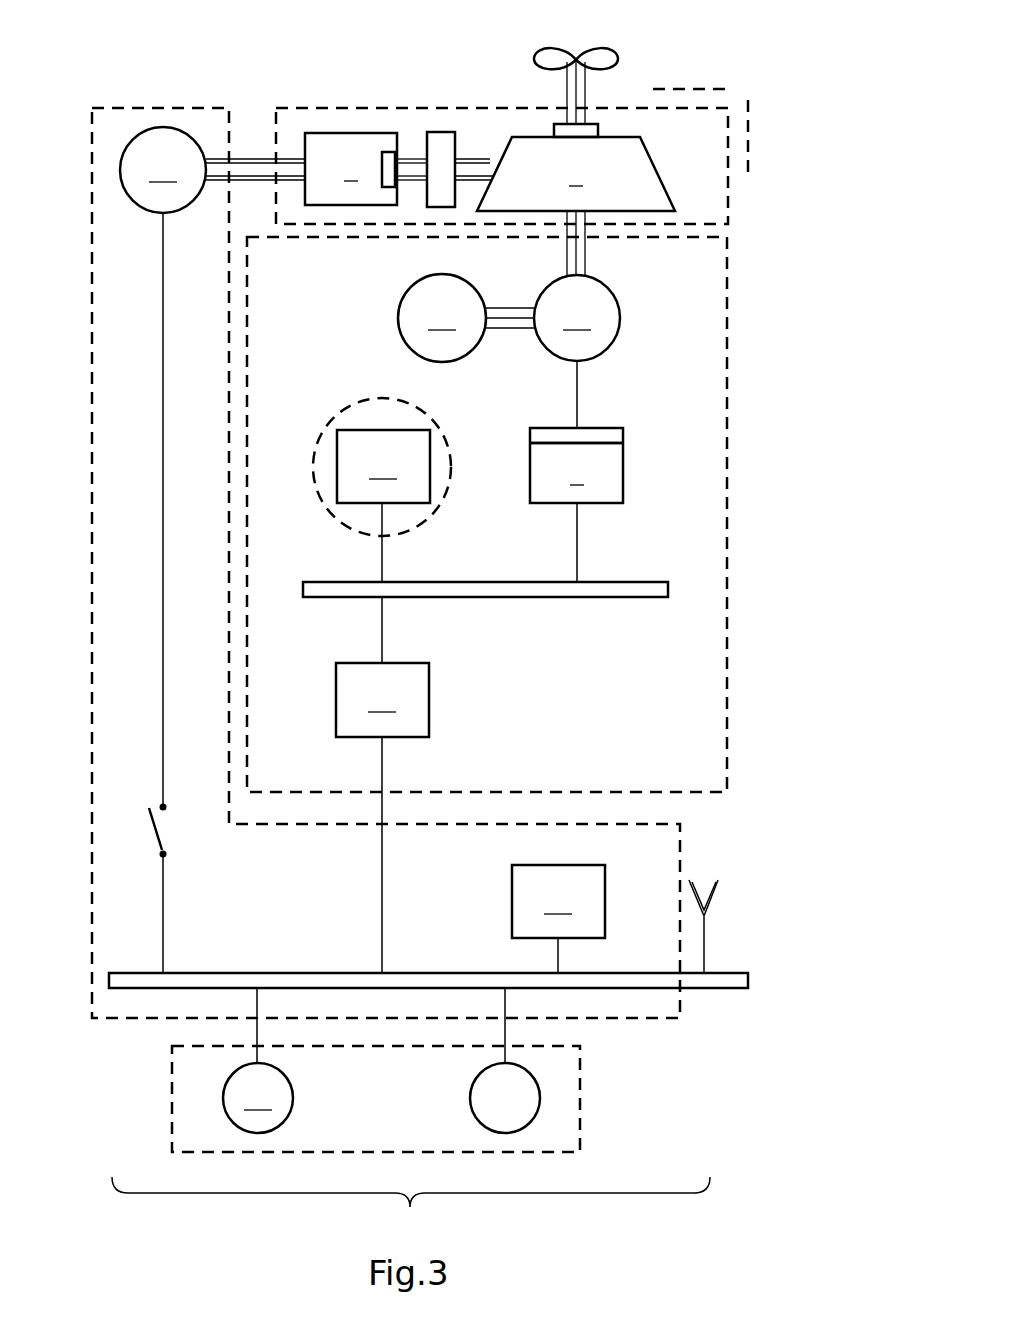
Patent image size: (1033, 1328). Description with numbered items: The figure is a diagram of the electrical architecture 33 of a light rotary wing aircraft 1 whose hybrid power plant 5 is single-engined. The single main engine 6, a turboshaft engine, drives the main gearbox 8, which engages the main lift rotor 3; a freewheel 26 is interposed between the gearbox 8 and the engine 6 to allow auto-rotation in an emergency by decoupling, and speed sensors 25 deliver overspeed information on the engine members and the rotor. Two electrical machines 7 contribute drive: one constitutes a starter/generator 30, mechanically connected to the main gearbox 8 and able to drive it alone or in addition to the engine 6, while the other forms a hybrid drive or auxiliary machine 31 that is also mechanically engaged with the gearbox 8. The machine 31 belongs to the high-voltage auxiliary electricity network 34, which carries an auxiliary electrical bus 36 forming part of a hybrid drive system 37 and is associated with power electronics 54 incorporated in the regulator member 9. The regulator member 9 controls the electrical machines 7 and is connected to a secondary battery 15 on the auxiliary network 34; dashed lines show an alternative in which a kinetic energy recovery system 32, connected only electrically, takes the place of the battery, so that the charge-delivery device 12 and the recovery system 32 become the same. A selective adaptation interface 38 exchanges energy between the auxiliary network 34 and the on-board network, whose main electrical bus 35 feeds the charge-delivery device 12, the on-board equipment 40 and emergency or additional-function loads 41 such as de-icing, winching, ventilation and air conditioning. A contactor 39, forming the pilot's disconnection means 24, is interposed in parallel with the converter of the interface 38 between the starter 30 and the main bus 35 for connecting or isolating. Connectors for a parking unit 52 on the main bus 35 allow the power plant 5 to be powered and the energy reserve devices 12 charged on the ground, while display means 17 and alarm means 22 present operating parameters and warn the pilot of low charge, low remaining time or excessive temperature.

The rotary wing aircraft 1 is at (750, 102).
The main lift rotor 3 is at (592, 52).
The power plant 5 is at (253, 141).
The main engine 6 is at (389, 128).
The electrical machine 7 is at (391, 208).
The main gearbox 8 is at (576, 174).
The regulator member 9 is at (576, 465).
The device for delivering electric charge 12 is at (438, 463).
The secondary battery 15 is at (383, 466).
The display means 17 is at (459, 1098).
The alarm means 22 is at (471, 1098).
The disconnection means 24 is at (182, 834).
The speed sensor 25 is at (598, 127).
The freewheel 26 is at (440, 132).
The starter/generator 30 is at (155, 134).
The hybrid drive machine 31 is at (606, 318).
The kinetic energy recovery system 32 is at (358, 405).
The electrical architecture 33 is at (411, 1207).
The auxiliary electricity network 34 is at (727, 678).
The main electrical bus 35 is at (302, 972).
The auxiliary electrical bus 36 is at (490, 598).
The hybrid drive system 37 is at (734, 749).
The selective adaptation interface 38 is at (382, 700).
The contactor 39 is at (216, 593).
The on-board equipment 40 is at (172, 1078).
The emergency loads 41 is at (258, 1098).
The parking unit 52 is at (707, 950).
The power electronics 54 is at (600, 428).